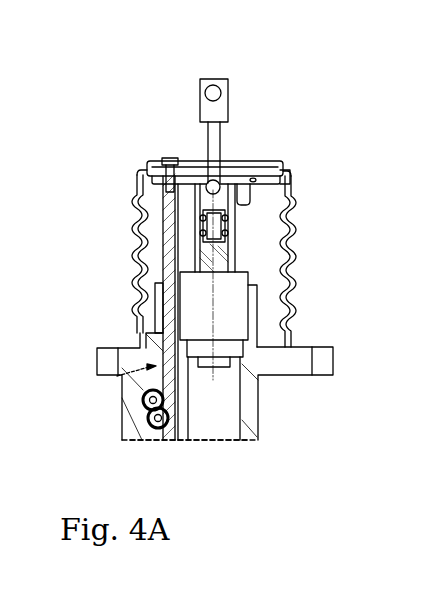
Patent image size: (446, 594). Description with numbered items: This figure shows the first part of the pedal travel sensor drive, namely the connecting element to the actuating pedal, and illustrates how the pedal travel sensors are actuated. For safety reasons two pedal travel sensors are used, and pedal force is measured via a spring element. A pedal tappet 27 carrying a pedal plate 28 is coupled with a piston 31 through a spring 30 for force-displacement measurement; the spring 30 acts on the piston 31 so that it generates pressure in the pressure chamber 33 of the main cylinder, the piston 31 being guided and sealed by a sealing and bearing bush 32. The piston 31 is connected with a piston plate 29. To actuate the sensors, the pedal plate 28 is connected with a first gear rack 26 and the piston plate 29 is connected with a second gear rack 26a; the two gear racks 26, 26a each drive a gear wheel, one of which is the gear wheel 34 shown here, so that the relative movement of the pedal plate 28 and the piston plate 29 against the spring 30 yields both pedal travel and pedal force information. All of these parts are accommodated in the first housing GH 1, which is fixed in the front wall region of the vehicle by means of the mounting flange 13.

The pedal tappet 27 is at (218, 87).
The pedal plate 28 is at (232, 166).
The piston plate 29 is at (290, 177).
The gear rack 1 26 is at (135, 258).
The gear rack 2 26a is at (250, 204).
The spring for force-displacement measurement 30 is at (225, 213).
The piston 31 is at (233, 255).
The sealing and bearing bush 32 is at (228, 300).
The flange for mounting on front wall 13 is at (280, 362).
The pressure chamber for piston 33 is at (240, 408).
The gear wheel 1 34 is at (145, 414).
The first housing GH 1 is at (252, 441).